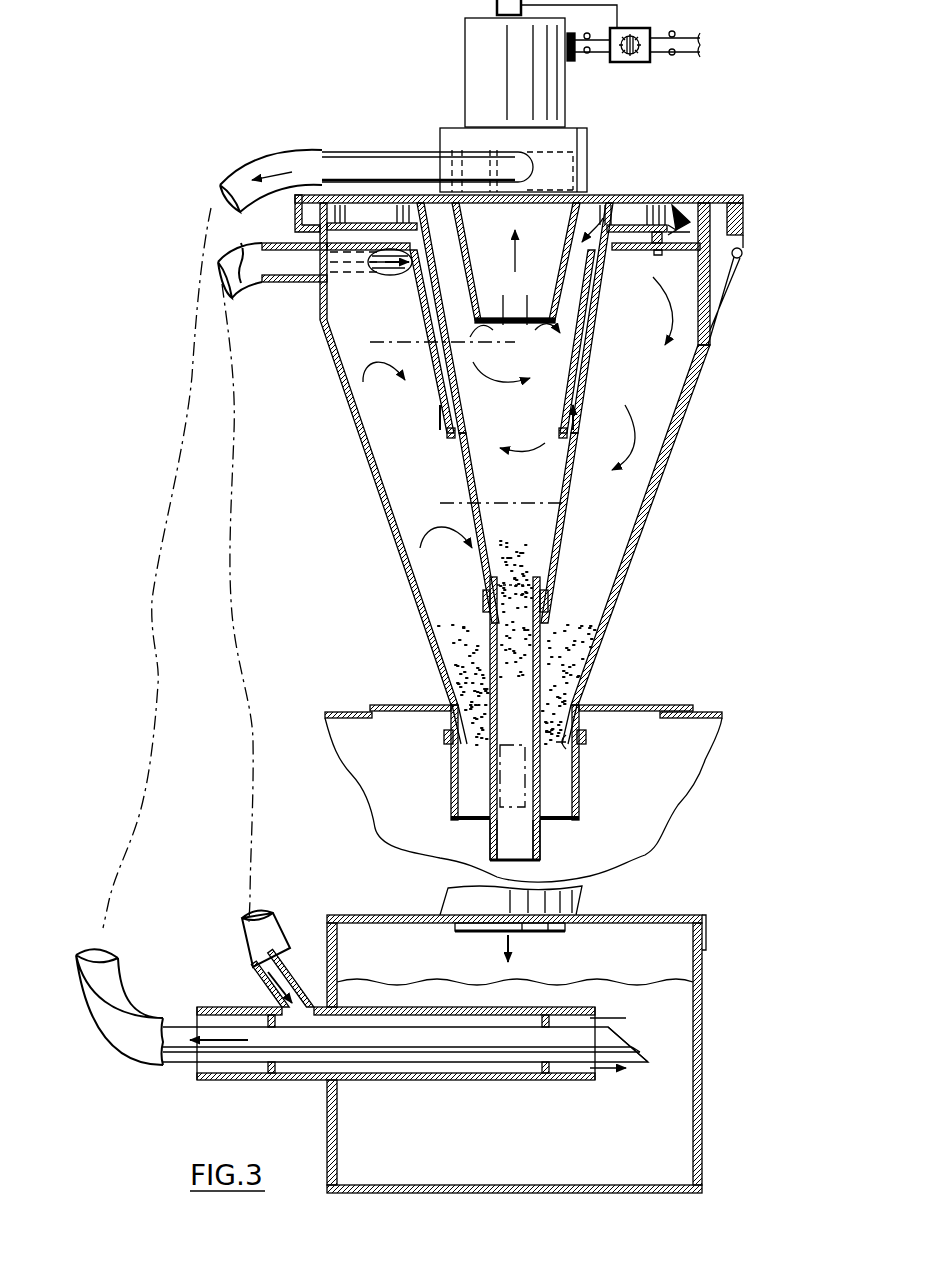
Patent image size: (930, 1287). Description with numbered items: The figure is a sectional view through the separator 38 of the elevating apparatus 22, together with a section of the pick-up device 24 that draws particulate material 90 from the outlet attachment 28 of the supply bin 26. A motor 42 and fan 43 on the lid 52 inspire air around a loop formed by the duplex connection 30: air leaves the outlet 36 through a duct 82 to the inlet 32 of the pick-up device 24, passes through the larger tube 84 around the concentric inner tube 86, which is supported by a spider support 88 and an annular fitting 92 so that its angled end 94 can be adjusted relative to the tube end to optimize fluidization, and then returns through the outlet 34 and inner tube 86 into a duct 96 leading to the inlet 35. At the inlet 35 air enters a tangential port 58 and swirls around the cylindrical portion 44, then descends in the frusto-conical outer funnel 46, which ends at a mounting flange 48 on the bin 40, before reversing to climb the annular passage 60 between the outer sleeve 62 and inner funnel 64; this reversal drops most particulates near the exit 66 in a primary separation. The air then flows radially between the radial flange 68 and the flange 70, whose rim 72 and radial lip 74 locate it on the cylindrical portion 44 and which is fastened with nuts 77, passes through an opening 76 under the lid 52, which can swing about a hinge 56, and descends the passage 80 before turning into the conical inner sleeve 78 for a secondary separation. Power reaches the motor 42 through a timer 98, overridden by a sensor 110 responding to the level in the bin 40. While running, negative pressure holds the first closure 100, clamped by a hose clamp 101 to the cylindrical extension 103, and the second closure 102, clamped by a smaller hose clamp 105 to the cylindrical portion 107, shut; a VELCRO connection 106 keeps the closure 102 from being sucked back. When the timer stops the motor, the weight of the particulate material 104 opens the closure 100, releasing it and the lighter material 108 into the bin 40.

The elevating apparatus 22 is at (142, 712).
The pick-up device 24 is at (271, 1082).
The supply bin 26 is at (583, 893).
The outlet attachment 28 is at (706, 1064).
The duplex connection 30 is at (145, 580).
The inlet 32 is at (258, 981).
The outlet 34 is at (306, 1081).
The inlet 35 is at (300, 283).
The outlet 36 is at (373, 152).
The separator 38 is at (655, 512).
The bin 40 is at (720, 740).
The motor 42 is at (466, 33).
The fan 43 is at (452, 130).
The cylindrical portion 44 is at (711, 325).
The outer funnel 46 is at (668, 452).
The mounting flange 48 is at (671, 705).
The lid 52 is at (595, 197).
The hinge 56 is at (738, 259).
The tangential port 58 is at (395, 276).
The annular passage 60 is at (577, 388).
The outer sleeve 62 is at (592, 355).
The inner funnel 64 is at (565, 480).
The exit 66 is at (574, 701).
The radial flange 68 is at (620, 251).
The flange 70 is at (633, 205).
The rim 72 is at (688, 203).
The radial lip 74 is at (730, 203).
The opening 76 is at (674, 208).
The nuts 77 is at (662, 253).
The conical inner sleeve 78 is at (578, 236).
The passage 80 is at (447, 322).
The duct 82 is at (242, 162).
The larger tube 84 is at (408, 1007).
The inner tube 86 is at (415, 1081).
The spider support 88 is at (565, 1010).
The particulate material 90 is at (688, 1106).
The annular fitting 92 is at (266, 1064).
The angled end 94 is at (642, 1046).
The duct 96 is at (96, 1020).
The timer 98 is at (650, 33).
The first closure 100 is at (579, 790).
The hose clamp 101 is at (444, 738).
The second closure 102 is at (541, 843).
The cylindrical extension 103 is at (568, 748).
The particulate material 104 is at (548, 684).
The hose clamp 105 is at (549, 600).
The VELCRO connection 106 is at (490, 837).
The cylindrical portion 107 is at (550, 585).
The lighter material 108 is at (491, 577).
The sensor 110 is at (500, 4).